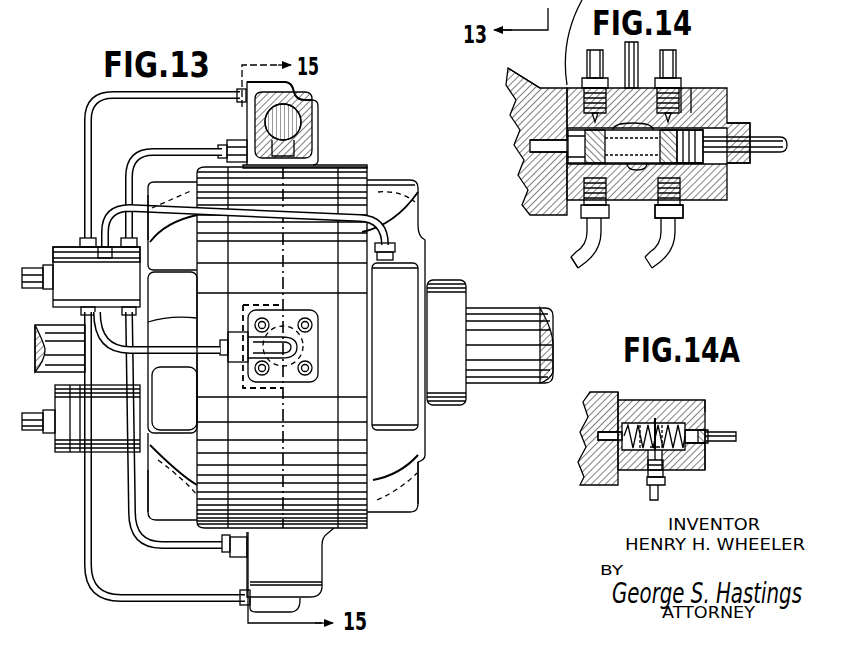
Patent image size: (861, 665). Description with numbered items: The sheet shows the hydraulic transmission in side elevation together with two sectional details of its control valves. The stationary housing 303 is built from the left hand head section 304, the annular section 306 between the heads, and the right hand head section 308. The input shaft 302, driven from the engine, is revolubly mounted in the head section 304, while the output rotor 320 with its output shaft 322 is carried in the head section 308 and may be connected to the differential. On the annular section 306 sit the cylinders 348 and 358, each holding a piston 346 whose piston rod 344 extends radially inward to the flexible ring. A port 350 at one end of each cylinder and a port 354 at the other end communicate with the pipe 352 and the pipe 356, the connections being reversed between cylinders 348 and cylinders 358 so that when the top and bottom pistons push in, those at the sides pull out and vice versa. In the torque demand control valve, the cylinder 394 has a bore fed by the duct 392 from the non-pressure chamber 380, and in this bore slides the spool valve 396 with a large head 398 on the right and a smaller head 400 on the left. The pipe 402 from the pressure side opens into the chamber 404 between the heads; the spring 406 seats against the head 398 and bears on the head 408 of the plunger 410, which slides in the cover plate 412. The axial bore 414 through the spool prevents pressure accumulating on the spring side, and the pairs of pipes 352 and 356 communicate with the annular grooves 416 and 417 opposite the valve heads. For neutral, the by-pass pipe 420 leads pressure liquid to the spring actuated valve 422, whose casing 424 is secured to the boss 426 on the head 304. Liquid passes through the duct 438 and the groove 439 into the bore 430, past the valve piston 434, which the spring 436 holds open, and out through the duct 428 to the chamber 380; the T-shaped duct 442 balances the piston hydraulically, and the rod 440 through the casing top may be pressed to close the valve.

In FIG. 13, the input shaft 302 is at (50, 340).
In FIG. 13, the stationary housing 303 is at (424, 467).
In FIG. 13, the left hand head section 304 is at (178, 197).
In FIG. 14, the left hand head section 304 is at (530, 110).
In FIG. 14A, the left hand head section 304 is at (583, 490).
In FIG. 13, the annular section 306 is at (307, 197).
In FIG. 13, the right hand head section 308 is at (377, 228).
In FIG. 13, the output rotor 320 is at (483, 306).
In FIG. 13, the output shaft 322 is at (525, 322).
In FIG. 13, the piston rod 344 is at (293, 140).
In FIG. 13, the piston 346 is at (280, 128).
In FIG. 13, the cylinder 348 is at (310, 100).
In FIG. 13, the port 350 is at (290, 85).
In FIG. 13, the pipe 352 is at (86, 123).
In FIG. 14, the pipe 352 is at (673, 52).
In FIG. 13, the port 354 is at (307, 122).
In FIG. 13, the pipe 356 is at (157, 152).
In FIG. 14, the pipe 356 is at (575, 250).
In FIG. 13, the cylinder 358 is at (290, 323).
In FIG. 14, the chamber 380 is at (530, 148).
In FIG. 14A, the chamber 380 is at (600, 408).
In FIG. 14, the duct 392 is at (530, 138).
In FIG. 13, the cylinder 394 is at (100, 218).
In FIG. 14, the cylinder 394 is at (697, 160).
In FIG. 14, the spool valve 396 is at (623, 168).
In FIG. 14, the head 398 is at (673, 152).
In FIG. 14, the head 400 is at (613, 205).
In FIG. 13, the pipe 402 is at (187, 213).
In FIG. 14, the pipe 402 is at (638, 50).
In FIG. 14, the chamber 404 is at (675, 237).
In FIG. 14, the spring 406 is at (690, 88).
In FIG. 14, the head 408 is at (690, 140).
In FIG. 13, the plunger 410 is at (33, 268).
In FIG. 14, the plunger 410 is at (762, 144).
In FIG. 13, the cover plate 412 is at (63, 260).
In FIG. 14, the cover plate 412 is at (707, 103).
In FIG. 14, the axial bore 414 is at (528, 68).
In FIG. 14, the annular groove 416 is at (680, 100).
In FIG. 14, the annular groove 417 is at (575, 95).
In FIG. 13, the by-pass pipe 420 is at (140, 480).
In FIG. 14A, the by-pass pipe 420 is at (660, 492).
In FIG. 13, the spring actuated valve 422 is at (100, 466).
In FIG. 14A, the spring actuated valve 422 is at (712, 412).
In FIG. 13, the casing 424 is at (110, 418).
In FIG. 14A, the casing 424 is at (670, 400).
In FIG. 14A, the boss 426 is at (605, 392).
In FIG. 14A, the duct 428 is at (617, 430).
In FIG. 14A, the bore 430 is at (645, 460).
In FIG. 14A, the valve piston 434 is at (680, 468).
In FIG. 14A, the spring 436 is at (652, 422).
In FIG. 14A, the duct 438 is at (640, 478).
In FIG. 14A, the groove 439 is at (660, 415).
In FIG. 13, the rod 440 is at (33, 432).
In FIG. 14A, the rod 440 is at (730, 438).
In FIG. 14A, the T-shaped duct 442 is at (705, 455).